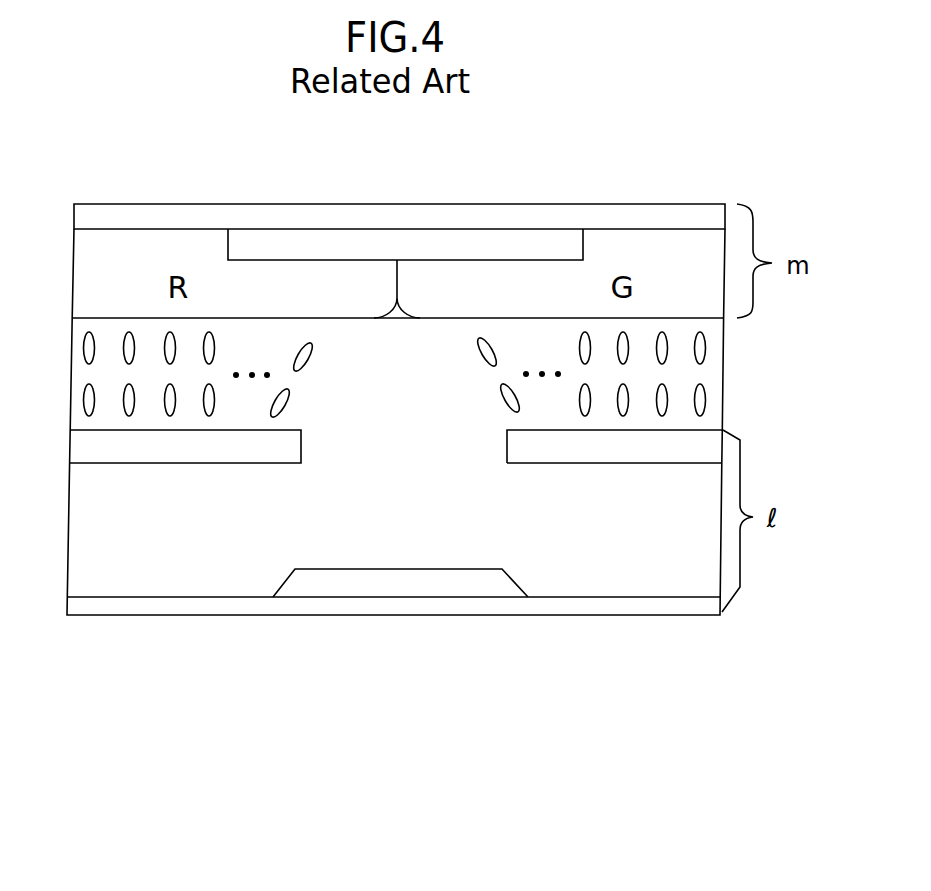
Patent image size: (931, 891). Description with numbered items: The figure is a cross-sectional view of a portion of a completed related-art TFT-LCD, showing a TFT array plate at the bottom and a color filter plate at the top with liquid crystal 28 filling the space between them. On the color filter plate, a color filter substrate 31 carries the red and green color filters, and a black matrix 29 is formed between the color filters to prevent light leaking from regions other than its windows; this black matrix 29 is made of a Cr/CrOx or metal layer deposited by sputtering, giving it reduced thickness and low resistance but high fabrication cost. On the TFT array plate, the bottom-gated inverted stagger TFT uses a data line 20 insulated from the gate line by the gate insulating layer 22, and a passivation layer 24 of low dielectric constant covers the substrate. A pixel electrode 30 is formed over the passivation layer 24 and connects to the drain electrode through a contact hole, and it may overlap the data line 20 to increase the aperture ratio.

The data line 20 is at (397, 582).
The gate insulating layer 22 is at (660, 603).
The passivation layer 24 is at (578, 548).
The liquid crystal 28 is at (89, 340).
The black matrix 29 is at (315, 238).
The pixel electrode 30 is at (635, 445).
The color filter substrate 31 is at (705, 207).